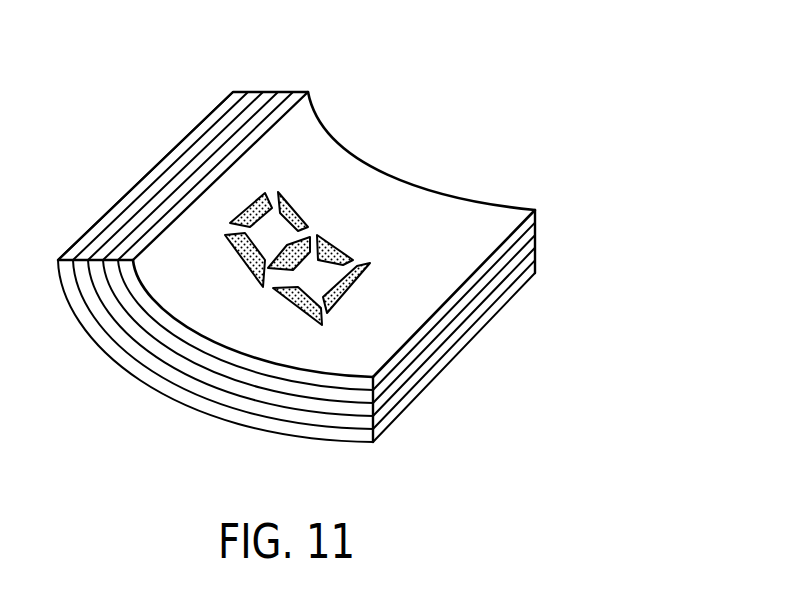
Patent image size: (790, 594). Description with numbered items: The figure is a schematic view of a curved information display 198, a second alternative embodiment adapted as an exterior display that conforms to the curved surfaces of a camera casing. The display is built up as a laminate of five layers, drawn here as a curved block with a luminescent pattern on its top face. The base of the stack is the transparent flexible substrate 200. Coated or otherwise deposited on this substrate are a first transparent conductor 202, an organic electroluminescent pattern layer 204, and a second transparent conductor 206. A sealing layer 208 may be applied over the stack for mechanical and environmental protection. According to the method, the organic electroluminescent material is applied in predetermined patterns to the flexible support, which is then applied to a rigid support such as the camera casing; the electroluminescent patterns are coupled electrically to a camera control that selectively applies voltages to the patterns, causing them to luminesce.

The curved information display 198 is at (458, 124).
The transparent flexible substrate 200 is at (540, 212).
The first transparent conductor 202 is at (538, 230).
The organic electroluminescent pattern layer 204 is at (538, 243).
The second transparent conductor 206 is at (538, 254).
The sealing layer 208 is at (527, 282).